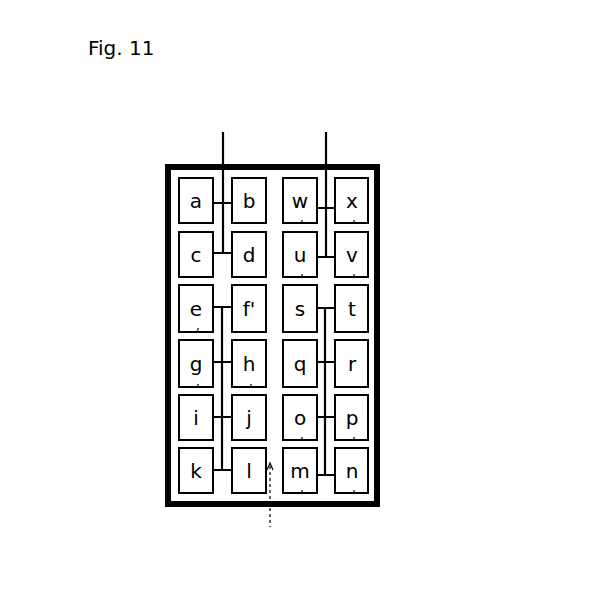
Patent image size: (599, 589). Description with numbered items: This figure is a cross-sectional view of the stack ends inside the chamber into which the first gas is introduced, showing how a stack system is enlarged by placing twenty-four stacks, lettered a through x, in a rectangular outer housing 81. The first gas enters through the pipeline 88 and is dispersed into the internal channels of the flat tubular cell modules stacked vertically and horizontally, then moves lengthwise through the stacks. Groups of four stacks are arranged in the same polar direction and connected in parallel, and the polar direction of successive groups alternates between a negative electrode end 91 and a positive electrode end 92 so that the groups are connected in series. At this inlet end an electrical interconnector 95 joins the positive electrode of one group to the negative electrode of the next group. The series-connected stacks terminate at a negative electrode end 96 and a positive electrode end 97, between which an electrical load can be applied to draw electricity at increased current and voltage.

The outer housing 81 is at (273, 163).
The first gas inlet pipeline 88 is at (265, 510).
The negative electrode end of a stack 91 is at (198, 480).
The positive electrode end of a stack 92 is at (303, 492).
The electrical interconnector between stacks 95 is at (325, 337).
The negative electrode end of stacks connected in series 96 is at (220, 182).
The positive electrode end of stacks connected in series 97 is at (323, 184).